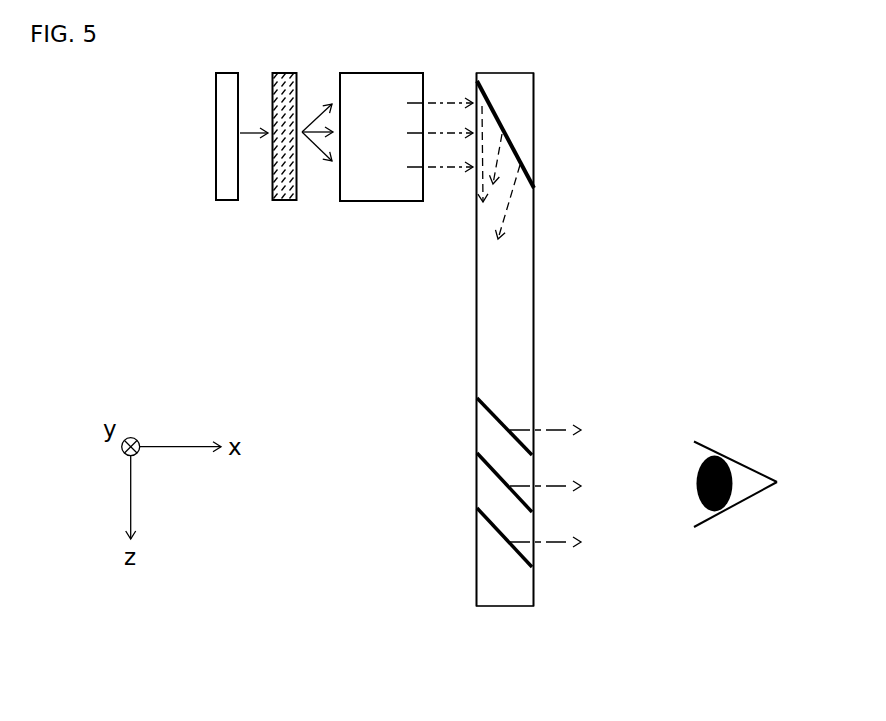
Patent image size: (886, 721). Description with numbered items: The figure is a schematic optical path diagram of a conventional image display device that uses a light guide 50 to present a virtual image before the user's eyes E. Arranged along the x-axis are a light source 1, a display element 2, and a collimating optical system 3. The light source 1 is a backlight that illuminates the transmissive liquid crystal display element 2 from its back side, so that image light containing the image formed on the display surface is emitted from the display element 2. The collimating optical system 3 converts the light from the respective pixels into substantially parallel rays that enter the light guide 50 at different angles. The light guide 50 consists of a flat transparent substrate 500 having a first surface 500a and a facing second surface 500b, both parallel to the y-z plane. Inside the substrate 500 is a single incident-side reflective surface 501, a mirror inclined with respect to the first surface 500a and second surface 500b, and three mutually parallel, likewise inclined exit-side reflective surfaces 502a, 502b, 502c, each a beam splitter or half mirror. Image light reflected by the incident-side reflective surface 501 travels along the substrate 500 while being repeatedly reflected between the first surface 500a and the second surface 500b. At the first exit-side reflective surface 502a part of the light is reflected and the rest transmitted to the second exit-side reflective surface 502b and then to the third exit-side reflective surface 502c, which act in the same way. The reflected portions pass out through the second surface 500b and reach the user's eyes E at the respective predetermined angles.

The light source 1 is at (225, 202).
The display element 2 is at (276, 202).
The collimating optical system 3 is at (373, 202).
The light guide 50 is at (504, 340).
The transparent substrate 500 is at (476, 353).
The first surface 500a is at (476, 288).
The second surface 500b is at (534, 285).
The incident-side reflective surface 501 is at (518, 150).
The first exit-side reflective surface 502a is at (490, 415).
The second exit-side reflective surface 502b is at (490, 471).
The third exit-side reflective surface 502c is at (490, 526).
The user's eyes E is at (728, 455).